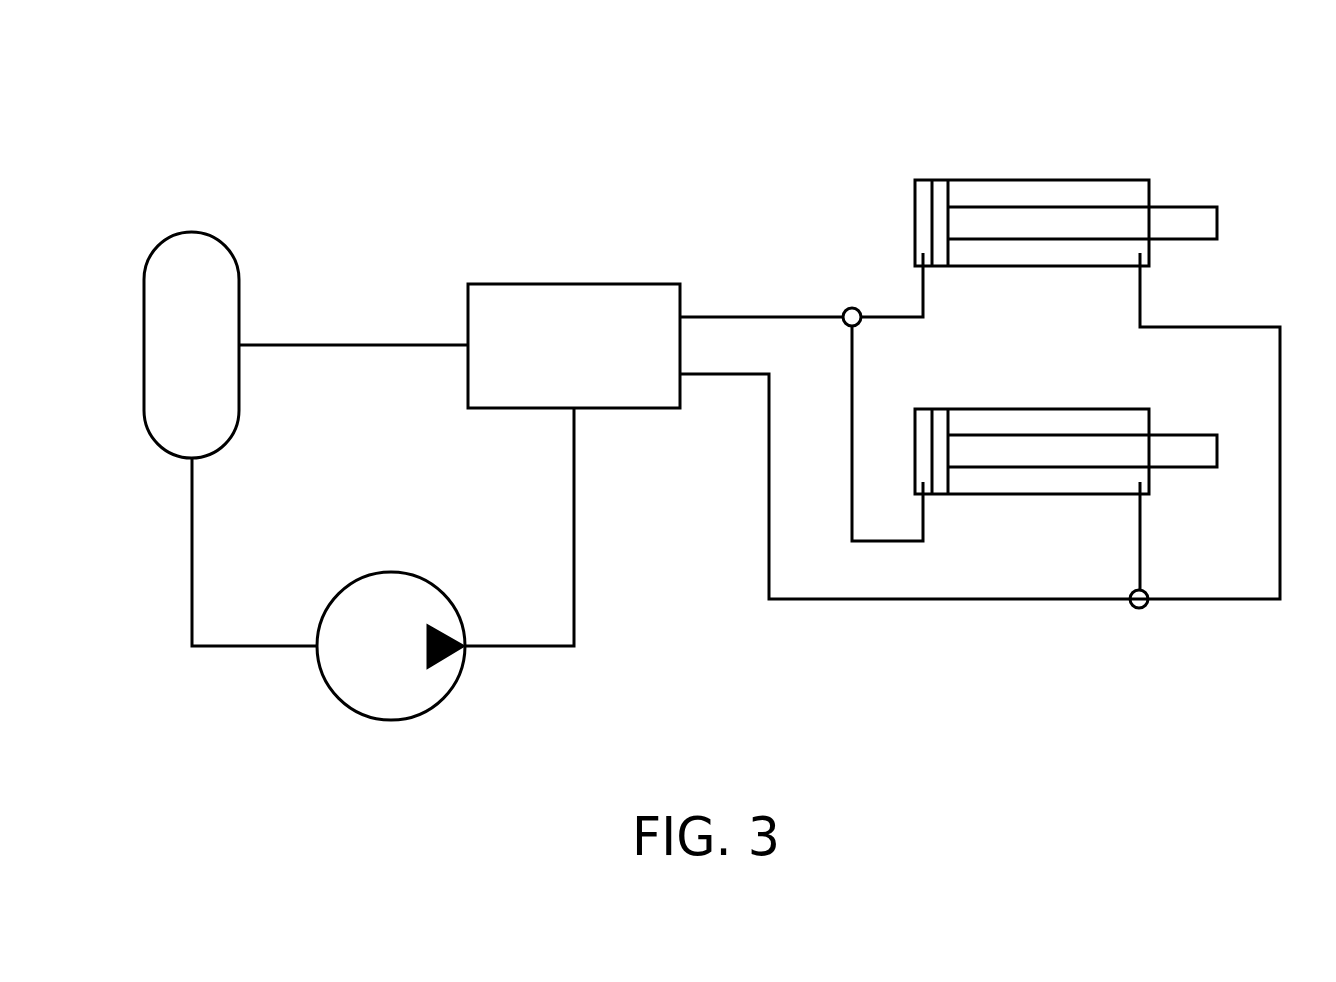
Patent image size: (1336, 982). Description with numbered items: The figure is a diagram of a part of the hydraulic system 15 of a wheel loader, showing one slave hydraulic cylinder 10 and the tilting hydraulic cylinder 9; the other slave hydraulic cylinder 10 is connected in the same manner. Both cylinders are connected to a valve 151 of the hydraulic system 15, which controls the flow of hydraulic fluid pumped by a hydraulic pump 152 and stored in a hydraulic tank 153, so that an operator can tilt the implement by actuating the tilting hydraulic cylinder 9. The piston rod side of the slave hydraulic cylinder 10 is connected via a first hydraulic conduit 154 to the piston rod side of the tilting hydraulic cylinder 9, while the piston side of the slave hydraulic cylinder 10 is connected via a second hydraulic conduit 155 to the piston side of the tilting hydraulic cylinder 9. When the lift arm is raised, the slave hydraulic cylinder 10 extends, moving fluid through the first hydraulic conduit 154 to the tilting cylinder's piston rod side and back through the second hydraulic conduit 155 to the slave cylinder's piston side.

The hydraulic system 15 is at (570, 105).
The valve 151 is at (572, 284).
The hydraulic pump 152 is at (388, 720).
The hydraulic tank 153 is at (193, 232).
The first hydraulic conduit 154 is at (1218, 600).
The second hydraulic conduit 155 is at (773, 317).
The slave hydraulic cylinder 10 is at (1031, 180).
The tilting hydraulic cylinder 9 is at (1031, 409).